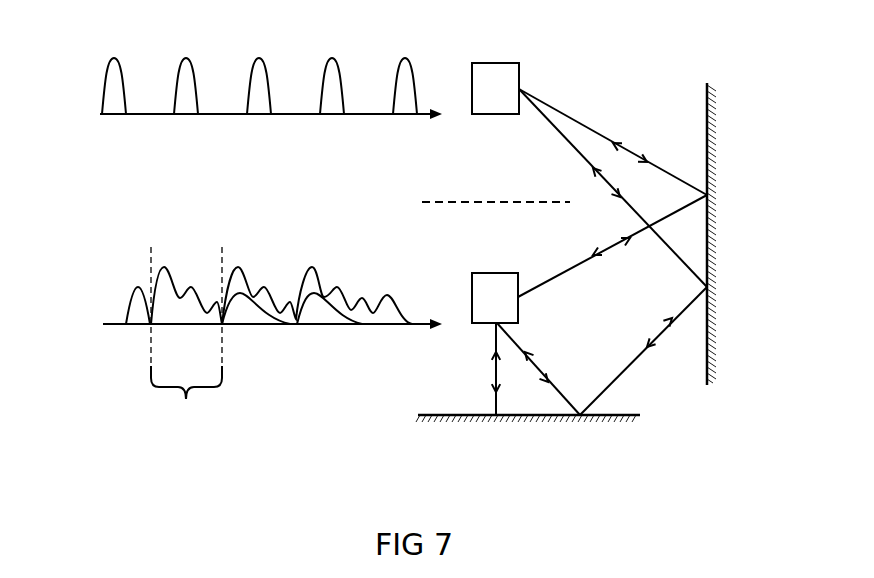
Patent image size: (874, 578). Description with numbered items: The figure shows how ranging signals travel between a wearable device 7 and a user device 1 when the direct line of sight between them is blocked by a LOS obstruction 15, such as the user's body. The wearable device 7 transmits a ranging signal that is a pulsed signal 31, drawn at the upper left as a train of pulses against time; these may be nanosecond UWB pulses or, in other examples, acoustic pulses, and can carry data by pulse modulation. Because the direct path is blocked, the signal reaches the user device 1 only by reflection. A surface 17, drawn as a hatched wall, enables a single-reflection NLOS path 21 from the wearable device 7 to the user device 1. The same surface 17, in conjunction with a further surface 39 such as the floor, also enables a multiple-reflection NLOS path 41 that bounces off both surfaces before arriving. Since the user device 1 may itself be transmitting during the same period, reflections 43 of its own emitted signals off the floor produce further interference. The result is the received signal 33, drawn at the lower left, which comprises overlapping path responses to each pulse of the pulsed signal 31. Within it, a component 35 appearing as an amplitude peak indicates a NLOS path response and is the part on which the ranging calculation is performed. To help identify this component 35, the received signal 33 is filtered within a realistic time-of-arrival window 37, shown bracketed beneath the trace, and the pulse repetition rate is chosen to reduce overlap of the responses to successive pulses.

The user device 1 is at (478, 270).
The wearable device 7 is at (521, 60).
The LOS obstruction 15 is at (422, 195).
The surface 17 is at (722, 98).
The single-reflection NLOS path 21 is at (590, 115).
The pulsed signal 31 is at (94, 59).
The received signal 33 is at (97, 282).
The component 35 is at (167, 258).
The time-of-arrival window 37 is at (186, 410).
The further surface 39 is at (532, 428).
The multiple-reflection NLOS path 41 is at (636, 373).
The reflections 43 is at (486, 370).